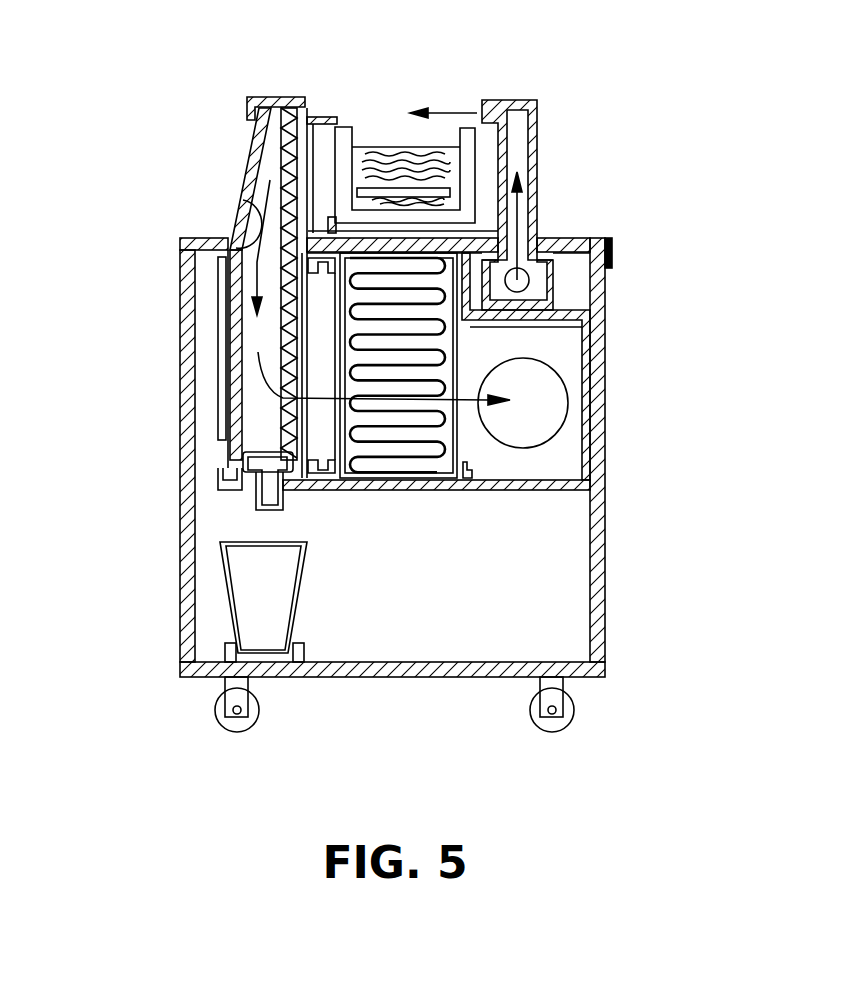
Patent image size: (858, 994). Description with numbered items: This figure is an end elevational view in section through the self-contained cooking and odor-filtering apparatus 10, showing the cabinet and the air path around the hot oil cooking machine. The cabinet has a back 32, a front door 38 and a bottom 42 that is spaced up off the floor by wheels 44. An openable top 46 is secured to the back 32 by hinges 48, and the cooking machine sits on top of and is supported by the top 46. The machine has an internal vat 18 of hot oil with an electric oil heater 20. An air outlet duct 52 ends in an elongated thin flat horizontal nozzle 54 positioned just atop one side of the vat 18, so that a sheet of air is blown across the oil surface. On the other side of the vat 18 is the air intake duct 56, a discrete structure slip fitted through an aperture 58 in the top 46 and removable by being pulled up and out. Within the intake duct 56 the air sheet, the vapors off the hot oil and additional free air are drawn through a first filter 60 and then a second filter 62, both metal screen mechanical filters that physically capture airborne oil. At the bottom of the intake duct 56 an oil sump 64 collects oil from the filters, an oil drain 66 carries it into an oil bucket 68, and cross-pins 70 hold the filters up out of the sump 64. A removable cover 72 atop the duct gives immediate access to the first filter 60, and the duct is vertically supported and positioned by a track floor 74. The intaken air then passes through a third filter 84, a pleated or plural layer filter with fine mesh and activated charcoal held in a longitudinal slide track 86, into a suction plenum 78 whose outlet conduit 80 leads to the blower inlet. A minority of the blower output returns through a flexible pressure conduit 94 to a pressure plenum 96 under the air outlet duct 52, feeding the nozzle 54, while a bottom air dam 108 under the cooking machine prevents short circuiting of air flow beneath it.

The apparatus 10 is at (697, 118).
The vat 18 is at (468, 165).
The oil heater 20 is at (425, 188).
The back 32 is at (607, 582).
The front door 38 is at (177, 570).
The bottom 42 is at (397, 676).
The wheels 44 is at (220, 708).
The top 46 is at (602, 237).
The hinges 48 is at (613, 240).
The air outlet duct 52 is at (537, 122).
The nozzle 54 is at (480, 113).
The air intake duct 56 is at (248, 152).
The aperture 58 is at (240, 207).
The first filter 60 is at (285, 170).
The second filter 62 is at (280, 318).
The oil sump 64 is at (260, 468).
The oil drain 66 is at (253, 502).
The oil bucket 68 is at (277, 596).
The cross-pins 70 is at (262, 460).
The removable cover 72 is at (287, 103).
The track floor 74 is at (215, 293).
The suction plenum 78 is at (567, 463).
The outlet conduit 80 is at (563, 382).
The third filter 84 is at (447, 338).
The slide track 86 is at (470, 470).
The pressure conduit 94 is at (537, 253).
The pressure plenum 96 is at (553, 283).
The bottom air dam 108 is at (312, 232).